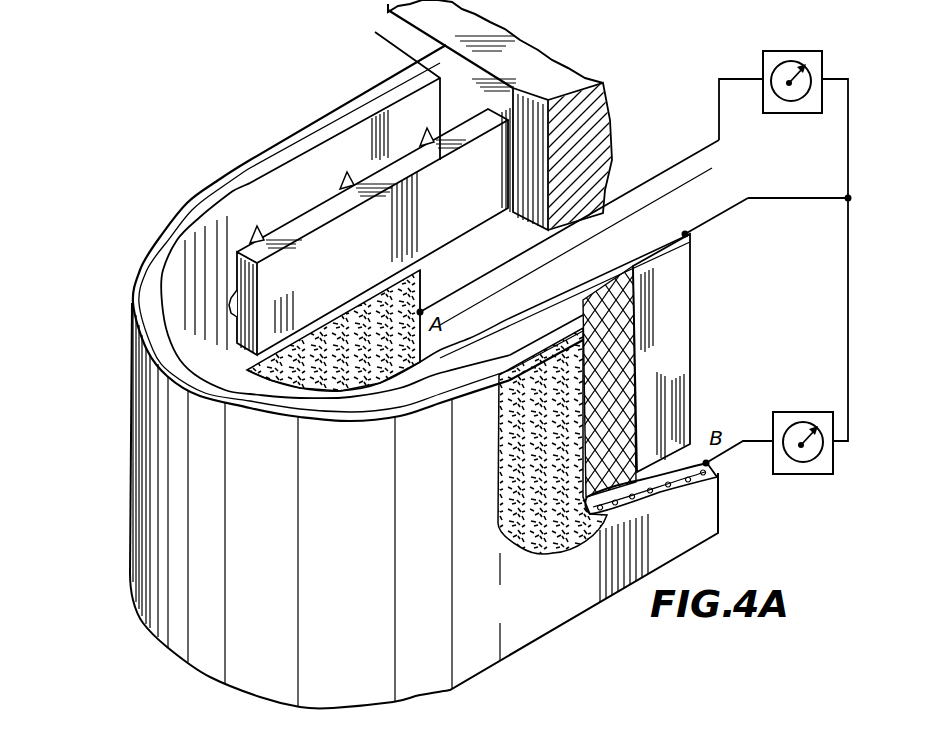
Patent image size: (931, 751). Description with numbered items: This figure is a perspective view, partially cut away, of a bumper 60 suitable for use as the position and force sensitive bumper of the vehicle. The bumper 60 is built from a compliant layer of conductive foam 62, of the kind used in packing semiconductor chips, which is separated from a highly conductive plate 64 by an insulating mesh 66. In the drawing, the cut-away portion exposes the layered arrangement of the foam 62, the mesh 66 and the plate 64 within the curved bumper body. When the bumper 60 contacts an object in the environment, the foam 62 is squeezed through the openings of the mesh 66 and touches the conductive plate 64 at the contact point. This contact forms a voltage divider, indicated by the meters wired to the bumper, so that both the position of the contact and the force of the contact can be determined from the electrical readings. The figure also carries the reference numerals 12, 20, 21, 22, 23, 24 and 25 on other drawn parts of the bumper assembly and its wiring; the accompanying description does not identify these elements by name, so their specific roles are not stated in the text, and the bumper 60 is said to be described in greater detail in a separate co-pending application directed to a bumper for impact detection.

The housing wall (cut-away) 12 is at (557, 70).
The electrode bar 20 is at (306, 227).
The outer curved wall 21 is at (195, 507).
The rim strip 22 is at (402, 60).
The electrode lead strip 23 is at (687, 445).
The electrode plate 24 is at (692, 298).
The terminal connection 25 is at (686, 233).
The bumper 60 is at (284, 133).
The conductive foam 62 is at (552, 360).
The conductive plate 64 is at (663, 362).
The insulating mesh 66 is at (627, 288).